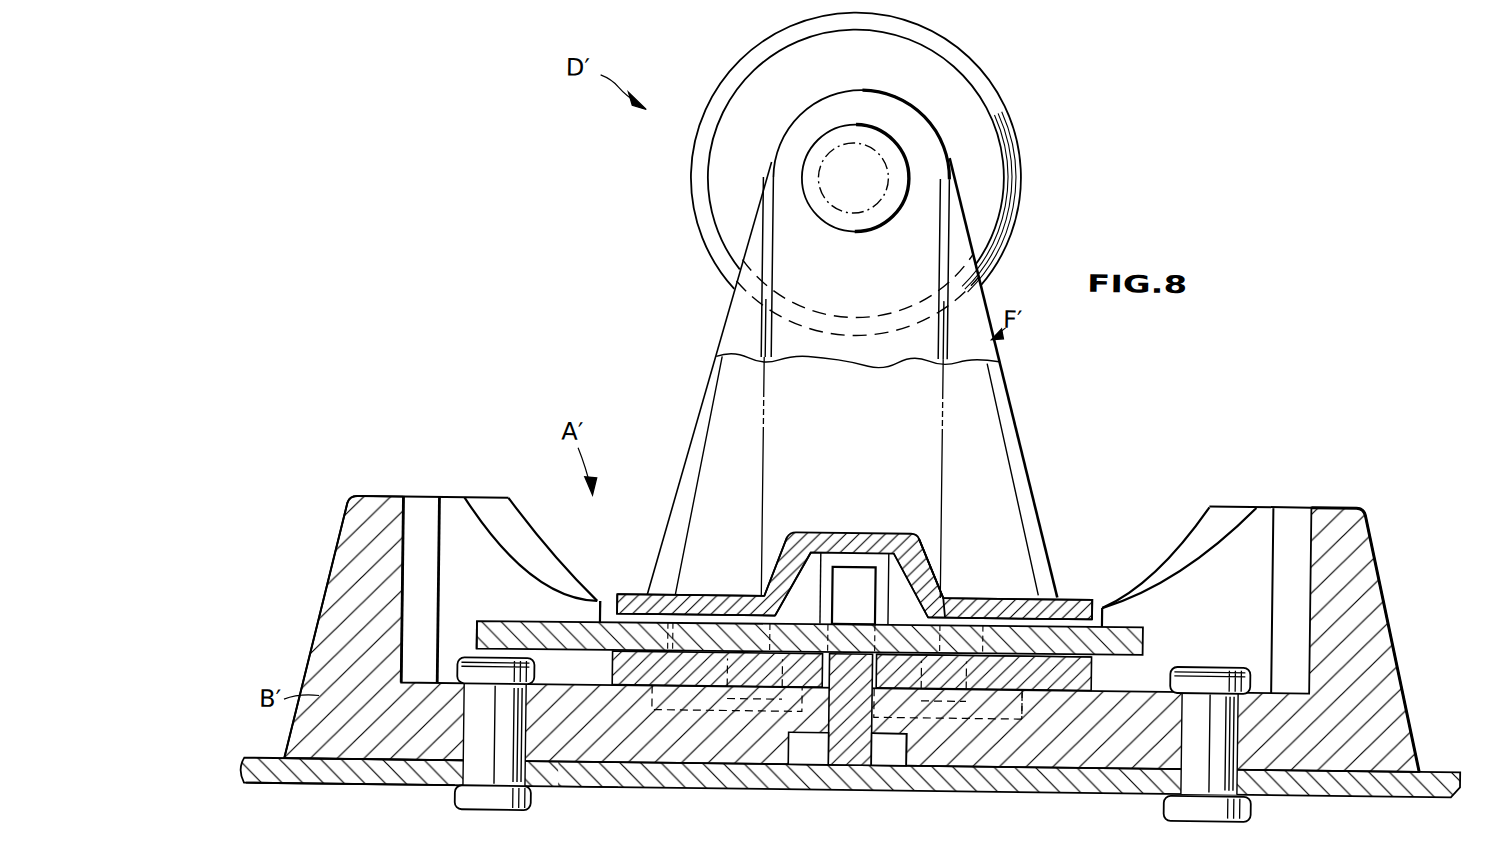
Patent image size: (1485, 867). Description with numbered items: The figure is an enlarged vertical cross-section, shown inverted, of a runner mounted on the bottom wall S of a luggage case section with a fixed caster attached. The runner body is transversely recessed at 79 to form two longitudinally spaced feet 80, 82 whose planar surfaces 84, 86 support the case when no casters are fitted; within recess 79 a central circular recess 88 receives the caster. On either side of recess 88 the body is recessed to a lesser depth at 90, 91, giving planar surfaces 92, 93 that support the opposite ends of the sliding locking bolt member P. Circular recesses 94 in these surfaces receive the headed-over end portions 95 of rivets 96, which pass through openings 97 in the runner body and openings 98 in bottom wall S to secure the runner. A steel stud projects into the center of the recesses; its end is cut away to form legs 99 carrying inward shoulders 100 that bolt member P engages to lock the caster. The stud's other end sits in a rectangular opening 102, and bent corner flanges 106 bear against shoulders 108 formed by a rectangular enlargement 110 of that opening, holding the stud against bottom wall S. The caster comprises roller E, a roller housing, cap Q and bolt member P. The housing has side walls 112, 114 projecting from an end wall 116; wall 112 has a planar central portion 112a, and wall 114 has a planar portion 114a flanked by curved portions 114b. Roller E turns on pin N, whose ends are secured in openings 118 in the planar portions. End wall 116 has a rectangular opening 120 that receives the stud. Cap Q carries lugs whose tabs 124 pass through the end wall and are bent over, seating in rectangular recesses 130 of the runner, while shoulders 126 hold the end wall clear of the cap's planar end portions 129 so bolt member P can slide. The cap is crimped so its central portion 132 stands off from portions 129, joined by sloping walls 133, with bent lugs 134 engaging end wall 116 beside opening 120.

The transverse recess 79 is at (531, 556).
The foot 80 is at (359, 523).
The foot 82 is at (1349, 528).
The planar surface 84 is at (380, 500).
The planar surface 86 is at (1333, 502).
The central circular recess 88 is at (601, 603).
The longitudinal recess 90 is at (445, 534).
The longitudinal recess 91 is at (1251, 523).
The planar surface 92 is at (467, 644).
The planar surface 93 is at (1165, 650).
The circular recess 94 is at (559, 671).
The headed-over end portion 95 is at (497, 677).
The rivet 96 is at (483, 717).
The opening 97 is at (465, 752).
The opening 98 is at (465, 781).
The leg 99 is at (860, 608).
The shoulder 100 is at (939, 566).
The rectangular opening 102 is at (828, 722).
The flange 106 is at (792, 792).
The shoulder 108 is at (800, 762).
The rectangular enlargement 110 is at (911, 753).
The side wall 112 is at (995, 348).
The planar central portion 112a is at (854, 306).
The side wall 114 is at (1021, 453).
The planar wall portion 114a is at (856, 476).
The curved wall portion 114b is at (725, 417).
The end wall 116 is at (1046, 699).
The opening 118 is at (829, 208).
The rectangular opening 120 is at (784, 596).
The tab 124 is at (748, 690).
The shoulder 126 is at (732, 597).
The planar end portion 129 is at (699, 597).
The rectangular recess 130 is at (664, 714).
The rectangular central portion 132 is at (896, 533).
The sloping wall 133 is at (784, 561).
The lug 134 is at (816, 587).
The roller E is at (998, 90).
The pin N is at (894, 185).
The locking bolt member P is at (1125, 632).
The cap Q is at (921, 536).
The bottom wall S is at (595, 788).